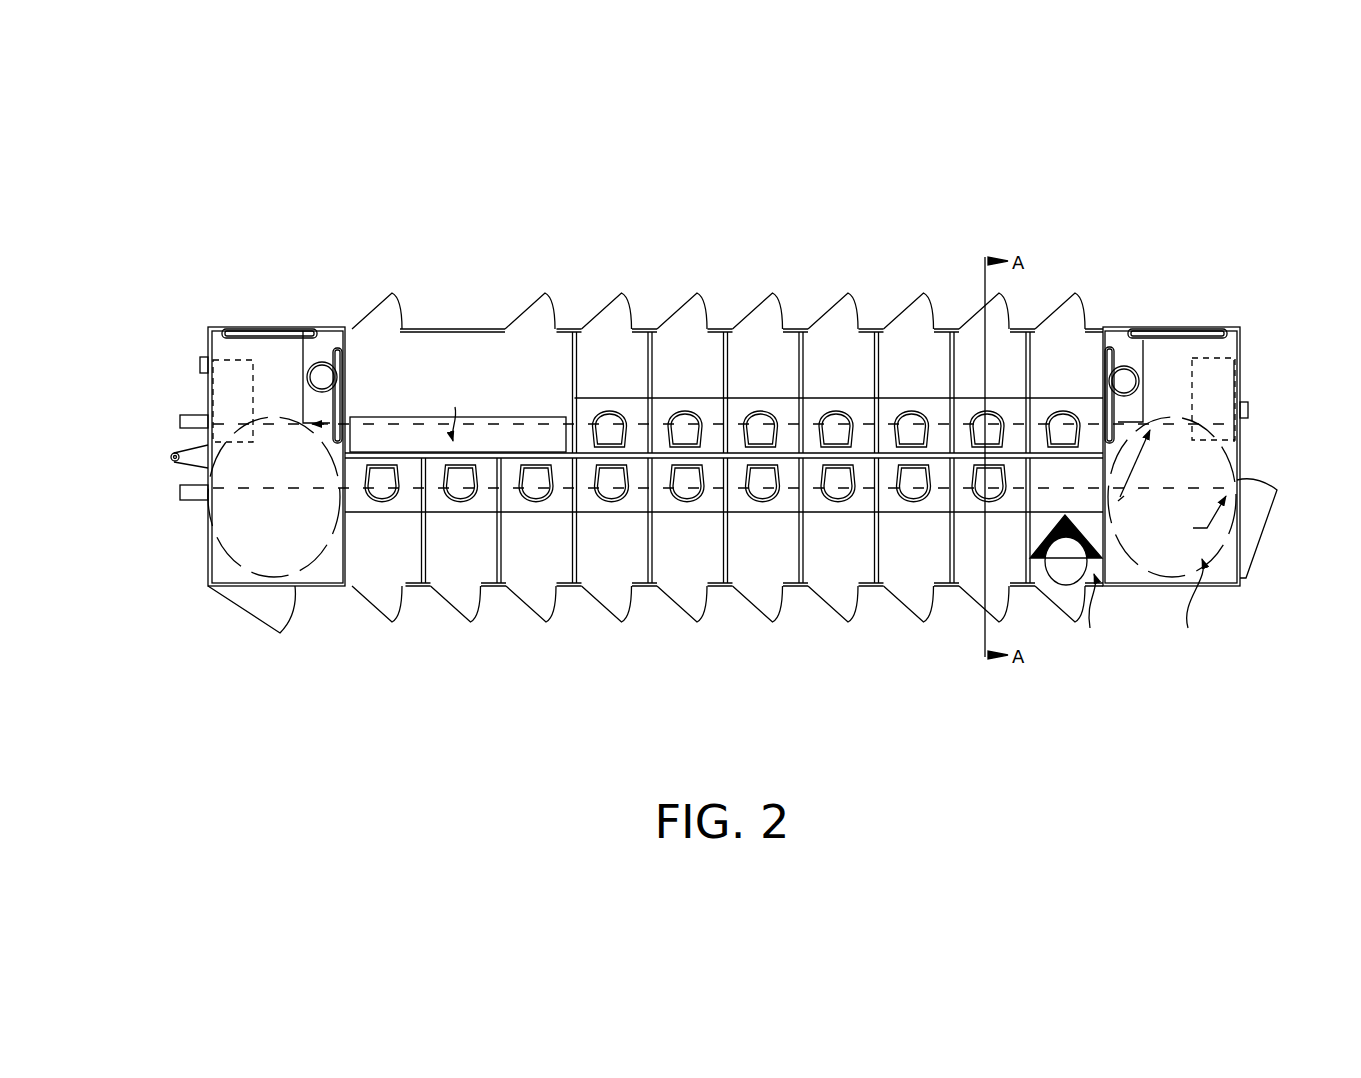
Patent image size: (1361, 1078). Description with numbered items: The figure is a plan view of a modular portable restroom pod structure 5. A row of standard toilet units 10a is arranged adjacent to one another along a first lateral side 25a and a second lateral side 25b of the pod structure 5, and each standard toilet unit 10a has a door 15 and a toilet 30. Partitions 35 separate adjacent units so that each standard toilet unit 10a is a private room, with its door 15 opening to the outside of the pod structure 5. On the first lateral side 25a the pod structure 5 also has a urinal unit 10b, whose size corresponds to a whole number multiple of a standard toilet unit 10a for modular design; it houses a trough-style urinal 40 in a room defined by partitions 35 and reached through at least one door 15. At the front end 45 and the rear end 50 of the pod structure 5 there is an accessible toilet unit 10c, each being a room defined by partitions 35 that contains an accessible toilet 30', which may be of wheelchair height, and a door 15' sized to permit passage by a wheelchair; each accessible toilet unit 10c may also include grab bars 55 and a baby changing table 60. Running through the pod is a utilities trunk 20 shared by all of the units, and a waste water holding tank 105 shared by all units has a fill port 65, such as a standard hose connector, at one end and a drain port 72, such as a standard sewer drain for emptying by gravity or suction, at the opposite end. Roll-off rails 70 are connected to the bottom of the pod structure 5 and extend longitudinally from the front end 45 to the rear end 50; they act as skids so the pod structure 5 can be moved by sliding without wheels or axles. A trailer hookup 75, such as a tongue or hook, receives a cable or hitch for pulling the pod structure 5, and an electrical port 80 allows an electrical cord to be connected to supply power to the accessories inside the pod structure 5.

The pod structure 5 is at (459, 99).
The standard toilet unit 10a is at (1011, 336).
The urinal unit 10b is at (478, 303).
The accessible toilet unit 10c is at (229, 314).
The door 15 is at (718, 419).
The door 15' is at (784, 555).
The utilities trunk 20 is at (810, 421).
The first lateral side 25a is at (722, 137).
The second lateral side 25b is at (722, 742).
The toilet 30 is at (722, 428).
The toilet 30' is at (717, 346).
The partition 35 is at (343, 360).
The trough-style urinal 40 is at (515, 440).
The front end 45 is at (77, 465).
The rear end 50 is at (1320, 474).
The grab bars 55 is at (265, 335).
The baby changing table 60 is at (225, 370).
The fill port 65 is at (196, 368).
The roll-off rails 70 is at (177, 422).
The drain port 72 is at (1251, 409).
The trailer hookup 75 is at (167, 460).
The electrical port 80 is at (192, 561).
The waste water holding tank 105 is at (771, 393).